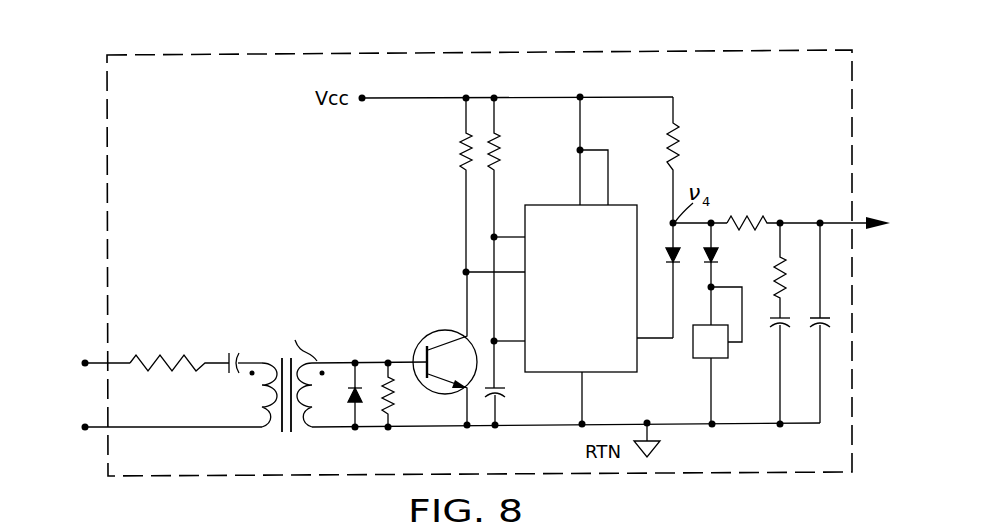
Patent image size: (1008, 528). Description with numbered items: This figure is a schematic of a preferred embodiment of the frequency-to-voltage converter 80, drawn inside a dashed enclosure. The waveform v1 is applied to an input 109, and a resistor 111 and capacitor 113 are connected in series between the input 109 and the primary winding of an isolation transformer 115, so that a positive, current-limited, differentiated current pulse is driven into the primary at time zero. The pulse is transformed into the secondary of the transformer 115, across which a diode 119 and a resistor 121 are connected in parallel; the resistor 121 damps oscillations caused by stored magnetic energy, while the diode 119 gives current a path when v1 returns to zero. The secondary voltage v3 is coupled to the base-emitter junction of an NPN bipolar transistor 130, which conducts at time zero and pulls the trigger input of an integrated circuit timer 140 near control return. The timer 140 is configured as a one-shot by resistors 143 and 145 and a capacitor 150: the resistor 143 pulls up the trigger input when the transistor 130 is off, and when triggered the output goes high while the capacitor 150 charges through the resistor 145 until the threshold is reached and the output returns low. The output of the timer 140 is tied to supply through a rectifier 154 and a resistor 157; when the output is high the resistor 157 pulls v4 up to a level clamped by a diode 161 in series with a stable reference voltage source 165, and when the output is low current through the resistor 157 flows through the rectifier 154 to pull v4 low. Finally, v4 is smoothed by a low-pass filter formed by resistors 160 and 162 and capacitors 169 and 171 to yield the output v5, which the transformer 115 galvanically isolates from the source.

The frequency-to-voltage converter 80 is at (715, 50).
The input 109 is at (87, 336).
The resistor 111 is at (178, 360).
The capacitor 113 is at (230, 357).
The isolation transformer 115 is at (290, 432).
The diode 119 is at (349, 383).
The resistor 121 is at (386, 375).
The NPN bipolar transistor 130 is at (452, 330).
The integrated circuit timer 140 is at (617, 218).
The resistor 143 is at (462, 142).
The resistor 145 is at (500, 143).
The capacitor 150 is at (505, 390).
The rectifier 154 is at (688, 245).
The resistor 157 is at (680, 138).
The resistor 160 is at (767, 222).
The diode 161 is at (737, 249).
The resistor 162 is at (785, 270).
The stable reference voltage source 165 is at (693, 357).
The capacitor 169 is at (778, 332).
The capacitor 171 is at (818, 332).